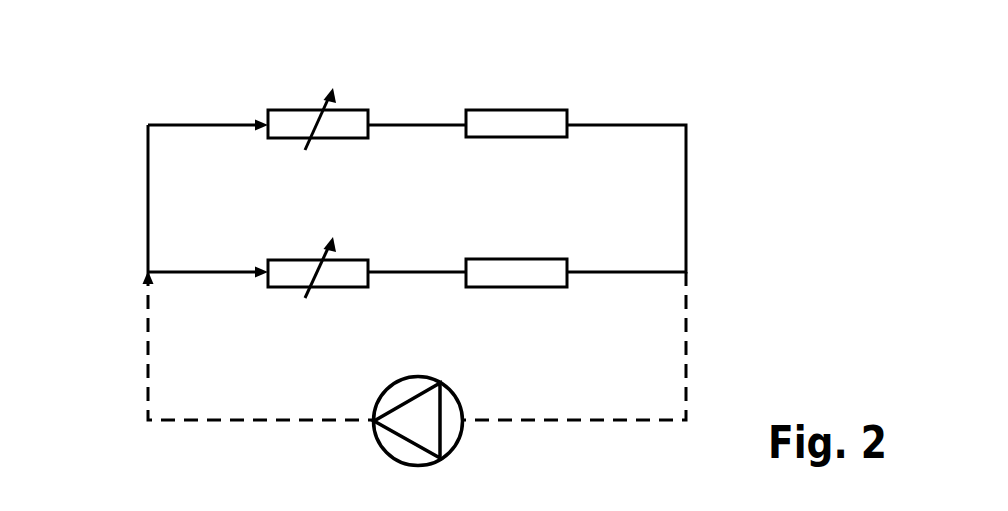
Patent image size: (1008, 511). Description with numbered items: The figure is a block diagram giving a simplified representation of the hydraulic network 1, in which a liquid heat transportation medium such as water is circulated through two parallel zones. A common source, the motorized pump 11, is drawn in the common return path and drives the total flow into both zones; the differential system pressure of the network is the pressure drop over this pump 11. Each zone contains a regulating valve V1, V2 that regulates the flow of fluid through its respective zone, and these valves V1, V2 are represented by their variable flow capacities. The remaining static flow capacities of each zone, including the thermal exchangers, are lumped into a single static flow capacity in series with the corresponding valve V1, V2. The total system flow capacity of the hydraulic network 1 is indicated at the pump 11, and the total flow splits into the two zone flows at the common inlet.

The hydraulic network 1 is at (353, 262).
The motorized pump 11 is at (450, 400).
The regulating valve V1 is at (357, 288).
The regulating valve V2 is at (355, 138).